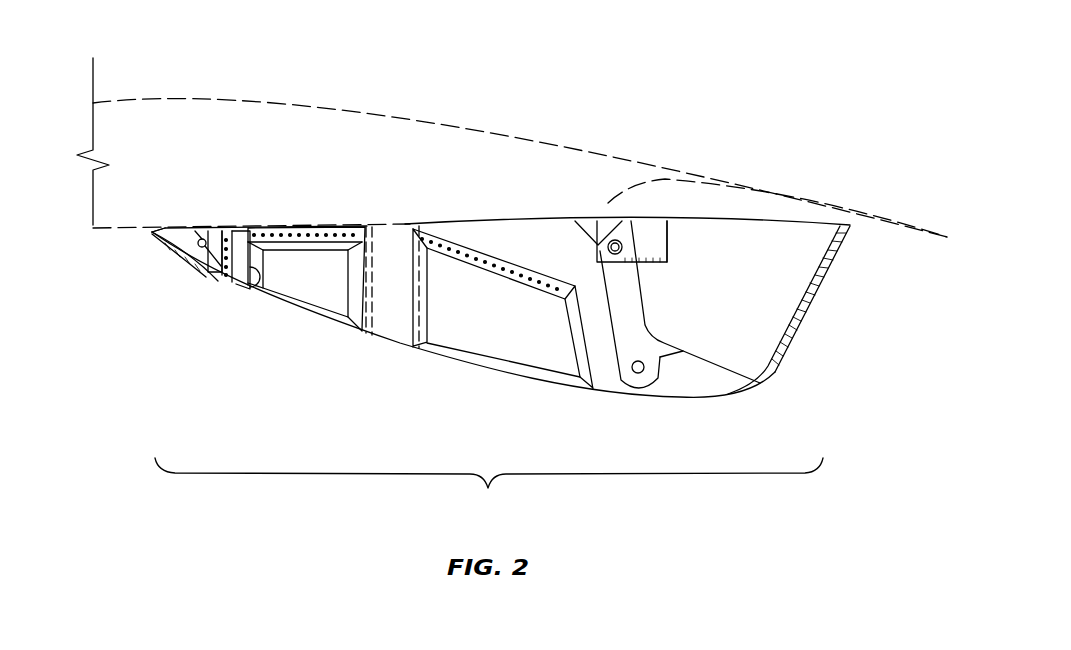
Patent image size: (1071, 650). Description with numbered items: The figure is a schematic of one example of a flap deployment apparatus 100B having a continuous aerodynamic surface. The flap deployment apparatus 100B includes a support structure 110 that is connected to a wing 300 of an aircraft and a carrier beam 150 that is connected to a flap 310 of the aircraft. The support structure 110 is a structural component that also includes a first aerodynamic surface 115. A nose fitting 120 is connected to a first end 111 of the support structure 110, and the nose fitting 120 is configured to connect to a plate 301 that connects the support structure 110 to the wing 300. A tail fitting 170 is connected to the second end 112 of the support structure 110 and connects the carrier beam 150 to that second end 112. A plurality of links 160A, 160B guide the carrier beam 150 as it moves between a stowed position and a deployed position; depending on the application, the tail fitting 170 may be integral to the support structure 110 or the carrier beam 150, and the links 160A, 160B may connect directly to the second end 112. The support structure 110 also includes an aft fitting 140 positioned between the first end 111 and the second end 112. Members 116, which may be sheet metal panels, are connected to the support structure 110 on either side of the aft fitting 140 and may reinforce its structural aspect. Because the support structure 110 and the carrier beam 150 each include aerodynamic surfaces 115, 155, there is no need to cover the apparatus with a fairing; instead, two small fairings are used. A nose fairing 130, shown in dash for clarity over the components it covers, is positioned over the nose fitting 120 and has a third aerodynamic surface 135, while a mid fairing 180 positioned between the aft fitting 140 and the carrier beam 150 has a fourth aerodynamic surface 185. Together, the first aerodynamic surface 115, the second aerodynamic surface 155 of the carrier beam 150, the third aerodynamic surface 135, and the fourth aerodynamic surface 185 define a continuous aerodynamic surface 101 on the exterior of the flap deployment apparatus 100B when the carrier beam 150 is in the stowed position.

The flap deployment apparatus 100B is at (129, 42).
The wing 300 is at (306, 104).
The flap 310 is at (679, 178).
The nose fairing 130 is at (148, 229).
The plate 301 is at (211, 230).
The third aerodynamic surface 135 is at (164, 250).
The nose fitting 120 is at (229, 273).
The first end 111 is at (263, 291).
The support structure 110 is at (312, 298).
The members 116 is at (318, 228).
The first aerodynamic surface 115 is at (322, 284).
The aft fitting 140 is at (390, 328).
The second end 112 is at (573, 378).
The mid fairing 180 is at (573, 221).
The fourth aerodynamic surface 185 is at (572, 255).
The link 160A is at (597, 238).
The second aerodynamic surface 155 is at (759, 312).
The link 160B is at (811, 317).
The carrier beam 150 is at (768, 357).
The tail fitting 170 is at (727, 390).
The continuous aerodynamic surface 101 is at (489, 491).